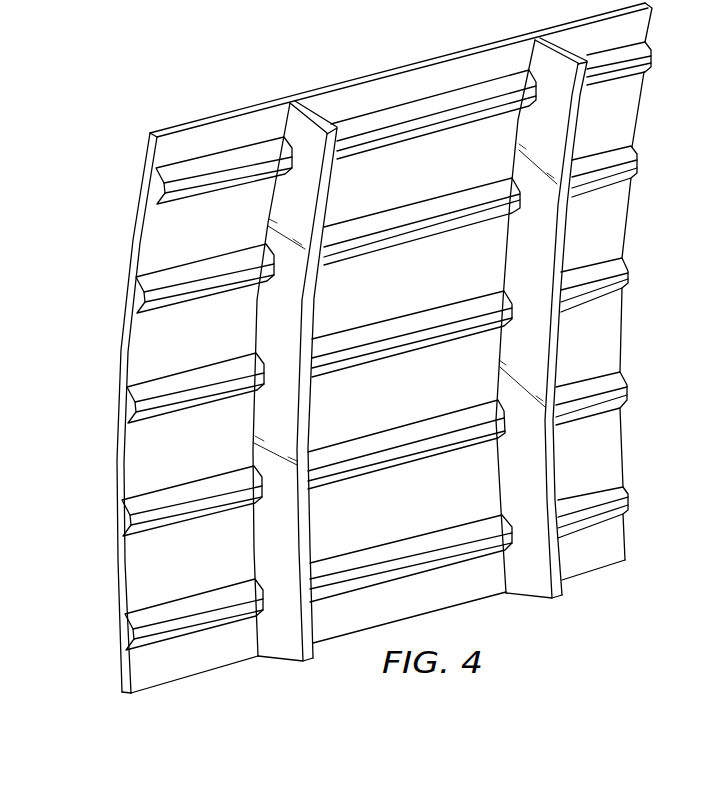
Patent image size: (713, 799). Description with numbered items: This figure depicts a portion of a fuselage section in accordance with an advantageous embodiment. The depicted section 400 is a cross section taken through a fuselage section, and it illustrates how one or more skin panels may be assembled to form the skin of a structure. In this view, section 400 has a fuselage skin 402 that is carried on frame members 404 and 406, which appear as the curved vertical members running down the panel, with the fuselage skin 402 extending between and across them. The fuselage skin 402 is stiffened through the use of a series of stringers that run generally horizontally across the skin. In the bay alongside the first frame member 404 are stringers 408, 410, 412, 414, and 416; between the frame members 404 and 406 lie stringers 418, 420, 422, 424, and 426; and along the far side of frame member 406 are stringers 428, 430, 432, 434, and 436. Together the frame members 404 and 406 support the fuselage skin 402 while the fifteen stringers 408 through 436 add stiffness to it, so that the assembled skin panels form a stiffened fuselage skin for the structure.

The section 400 is at (306, 65).
The fuselage skin 402 is at (385, 70).
The frame member 404 is at (285, 662).
The frame member 406 is at (563, 587).
The stringer 408 is at (220, 160).
The stringer 410 is at (205, 267).
The stringer 412 is at (197, 377).
The stringer 414 is at (193, 490).
The stringer 416 is at (192, 603).
The stringer 418 is at (470, 95).
The stringer 420 is at (425, 210).
The stringer 422 is at (413, 317).
The stringer 424 is at (410, 430).
The stringer 426 is at (413, 545).
The stringer 428 is at (655, 67).
The stringer 430 is at (638, 172).
The stringer 432 is at (630, 282).
The stringer 434 is at (629, 399).
The stringer 436 is at (630, 508).